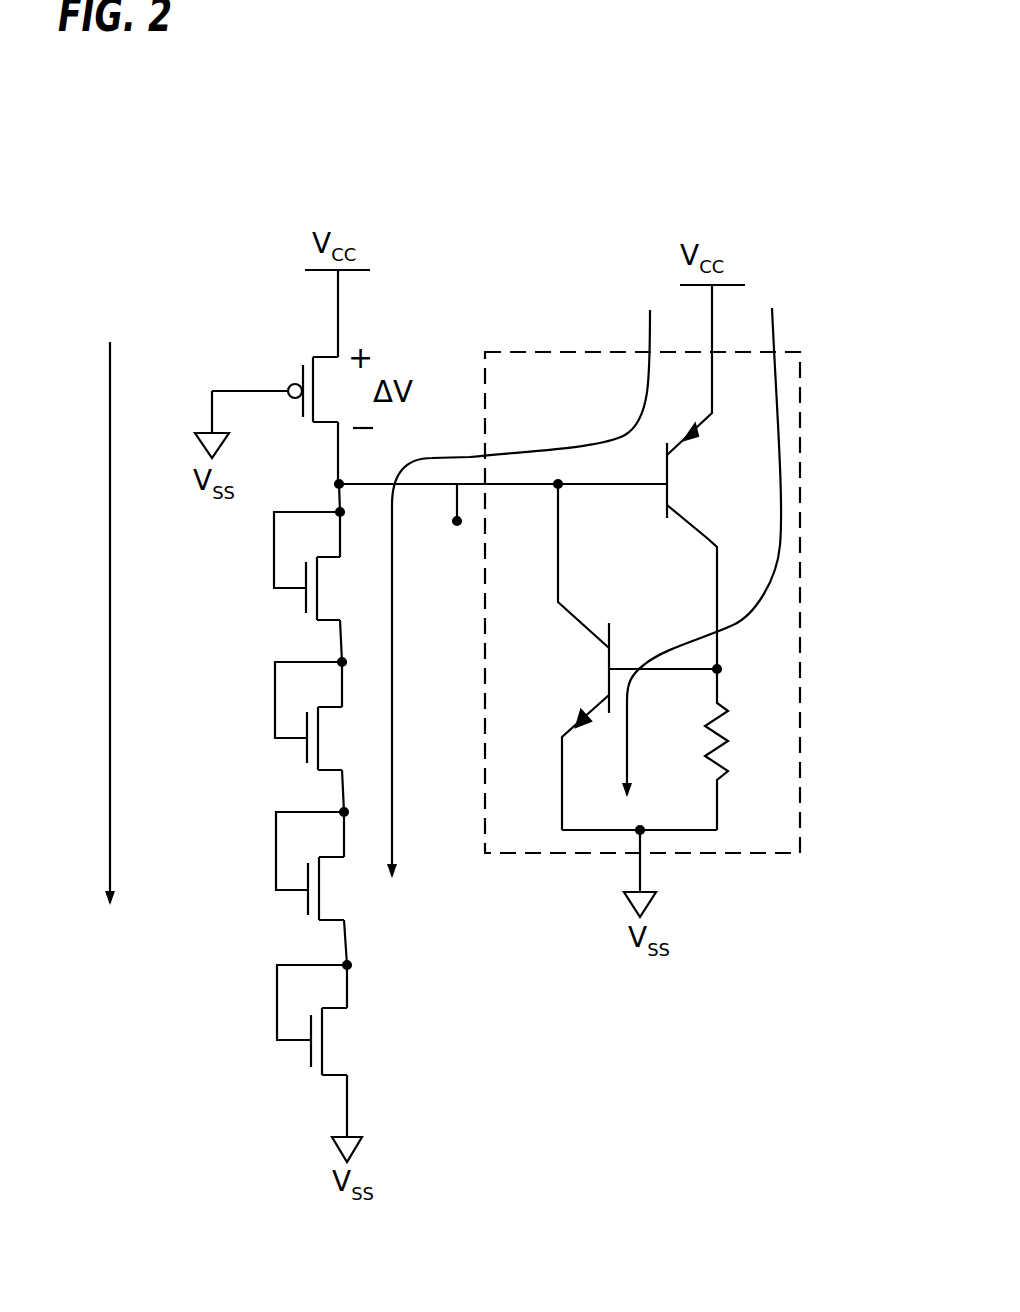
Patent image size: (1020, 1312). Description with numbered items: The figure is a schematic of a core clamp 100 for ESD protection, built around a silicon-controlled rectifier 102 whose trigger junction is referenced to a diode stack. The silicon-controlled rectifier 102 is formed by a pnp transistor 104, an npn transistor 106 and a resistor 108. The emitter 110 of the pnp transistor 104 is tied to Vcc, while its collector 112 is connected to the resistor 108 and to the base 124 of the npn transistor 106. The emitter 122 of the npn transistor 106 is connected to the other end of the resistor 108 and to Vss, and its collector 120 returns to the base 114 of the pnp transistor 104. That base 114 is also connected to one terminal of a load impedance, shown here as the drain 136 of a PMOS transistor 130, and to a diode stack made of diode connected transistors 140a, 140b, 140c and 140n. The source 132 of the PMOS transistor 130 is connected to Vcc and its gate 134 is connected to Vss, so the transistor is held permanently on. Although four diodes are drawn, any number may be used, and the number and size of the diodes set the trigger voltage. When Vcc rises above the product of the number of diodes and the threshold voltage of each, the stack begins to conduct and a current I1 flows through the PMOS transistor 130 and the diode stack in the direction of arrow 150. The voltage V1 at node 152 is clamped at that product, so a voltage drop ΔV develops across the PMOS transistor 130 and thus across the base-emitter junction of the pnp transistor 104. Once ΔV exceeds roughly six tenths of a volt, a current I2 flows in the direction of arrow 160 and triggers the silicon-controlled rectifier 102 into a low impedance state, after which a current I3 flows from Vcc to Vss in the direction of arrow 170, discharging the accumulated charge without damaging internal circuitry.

The core clamp 100 is at (584, 184).
The silicon-controlled rectifier 102 is at (799, 411).
The pnp transistor 104 is at (668, 476).
The npn transistor 106 is at (639, 657).
The resistor 108 is at (730, 747).
The emitter 110 is at (712, 406).
The collector 112 is at (695, 530).
The base 114 is at (642, 486).
The collector 120 is at (575, 608).
The emitter 122 is at (595, 724).
The base 124 is at (678, 671).
The PMOS transistor 130 is at (300, 378).
The source 132 is at (338, 322).
The gate 134 is at (268, 397).
The drain 136 is at (340, 468).
The diode connected transistor 140a is at (268, 550).
The diode connected transistor 140b is at (269, 700).
The diode connected transistor 140c is at (270, 852).
The diode connected transistor 140n is at (271, 1003).
The arrow 150 is at (108, 392).
The node 152 is at (455, 503).
The arrow 160 is at (393, 718).
The arrow 170 is at (733, 625).